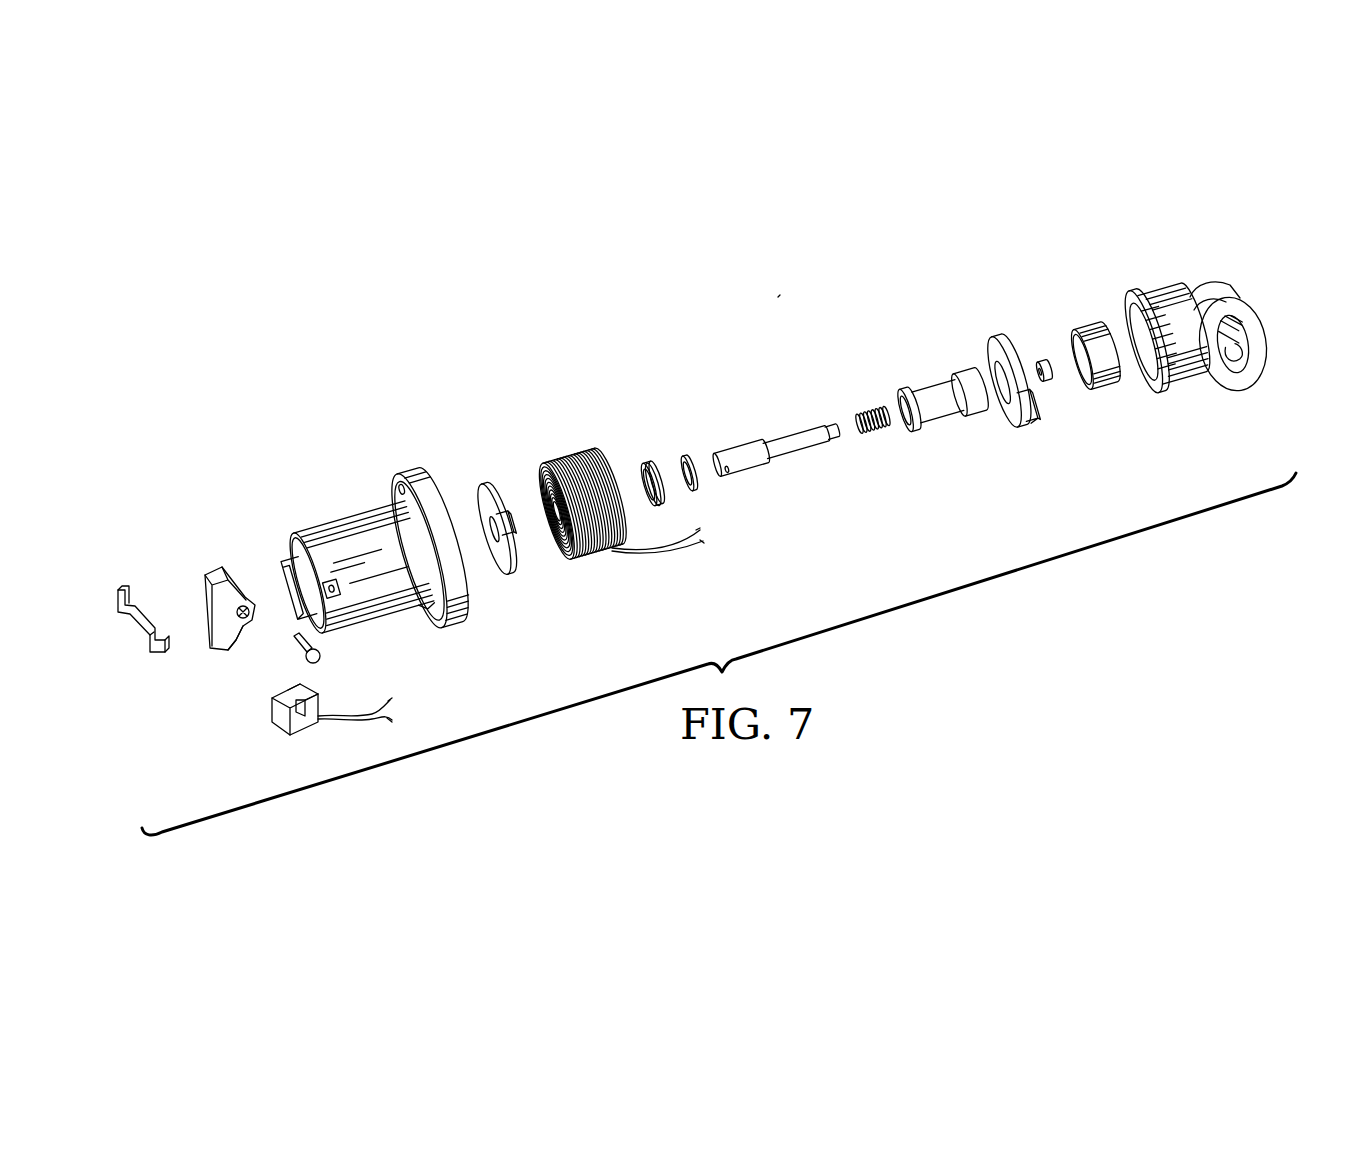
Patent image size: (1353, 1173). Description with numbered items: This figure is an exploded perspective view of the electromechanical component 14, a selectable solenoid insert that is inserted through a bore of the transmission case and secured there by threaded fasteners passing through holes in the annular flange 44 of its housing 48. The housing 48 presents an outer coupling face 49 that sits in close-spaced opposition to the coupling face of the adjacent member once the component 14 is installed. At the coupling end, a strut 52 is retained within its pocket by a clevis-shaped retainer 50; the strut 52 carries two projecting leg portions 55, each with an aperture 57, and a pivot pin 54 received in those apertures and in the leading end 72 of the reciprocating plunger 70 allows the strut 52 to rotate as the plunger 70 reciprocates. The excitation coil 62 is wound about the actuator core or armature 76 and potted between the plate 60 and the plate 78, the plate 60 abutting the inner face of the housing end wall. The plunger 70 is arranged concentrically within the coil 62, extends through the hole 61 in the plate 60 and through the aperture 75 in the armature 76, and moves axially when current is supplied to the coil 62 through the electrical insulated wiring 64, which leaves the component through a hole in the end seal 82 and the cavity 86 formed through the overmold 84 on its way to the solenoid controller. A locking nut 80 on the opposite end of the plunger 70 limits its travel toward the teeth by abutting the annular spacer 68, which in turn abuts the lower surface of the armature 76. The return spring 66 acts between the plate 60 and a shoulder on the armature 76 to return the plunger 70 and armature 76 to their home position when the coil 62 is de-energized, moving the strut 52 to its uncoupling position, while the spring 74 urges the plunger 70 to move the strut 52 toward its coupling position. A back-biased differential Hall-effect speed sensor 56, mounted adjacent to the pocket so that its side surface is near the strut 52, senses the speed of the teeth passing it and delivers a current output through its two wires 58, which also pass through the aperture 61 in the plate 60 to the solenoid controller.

The electromechanical component 14 is at (779, 290).
The annular flange 44 is at (402, 478).
The housing 48 is at (352, 505).
The outer coupling face 49 is at (297, 548).
The clevis-shaped retainer 50 is at (125, 586).
The strut 52 is at (218, 572).
The pivot pin 54 is at (320, 655).
The projecting leg portions 55 is at (243, 628).
The magnetic field speed sensor 56 is at (270, 722).
The aperture 57 is at (248, 604).
The wires 58 is at (375, 712).
The plate 60 is at (485, 495).
The hole 61 is at (492, 548).
The excitation coil 62 is at (568, 463).
The electrical insulated wiring 64 is at (645, 548).
The return spring 66 is at (652, 470).
The annular spacer 68 is at (692, 464).
The reciprocating plunger 70 is at (782, 432).
The leading end 72 is at (722, 476).
The spring 74 is at (878, 434).
The aperture 75 is at (905, 405).
The armature 76 is at (950, 428).
The plate 78 is at (1000, 338).
The locking nut 80 is at (1050, 384).
The end seal 82 is at (1112, 392).
The overmold 84 is at (1154, 278).
The cavity 86 is at (1240, 348).